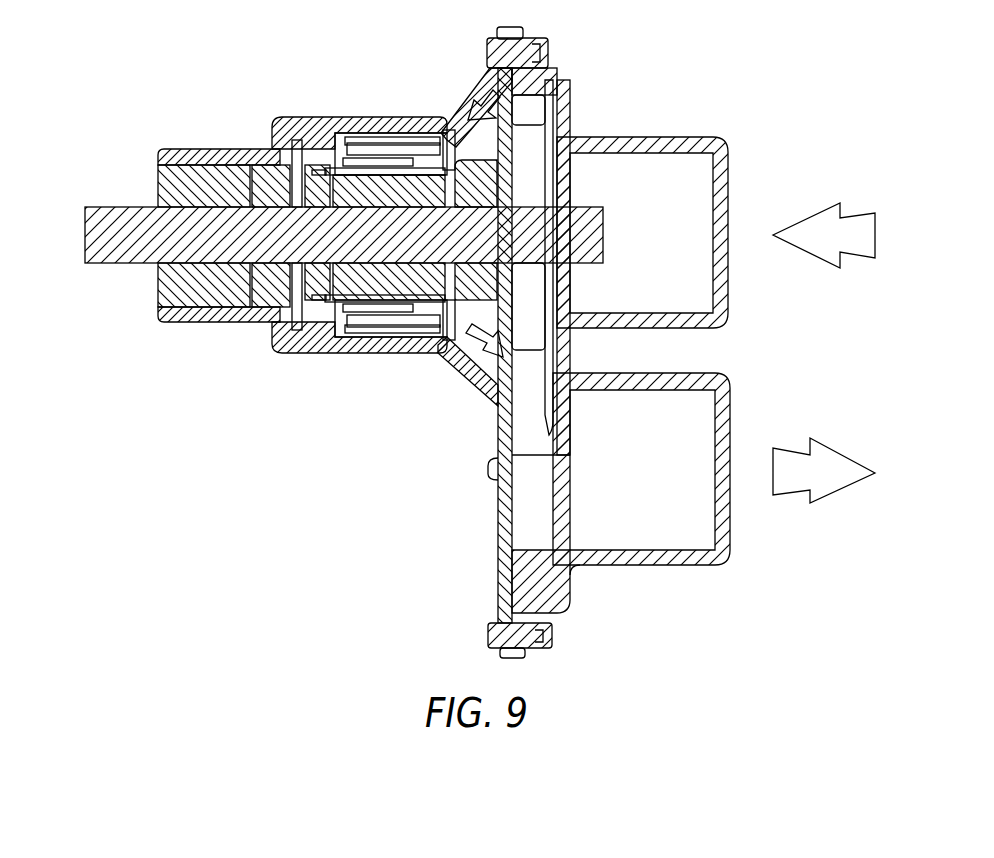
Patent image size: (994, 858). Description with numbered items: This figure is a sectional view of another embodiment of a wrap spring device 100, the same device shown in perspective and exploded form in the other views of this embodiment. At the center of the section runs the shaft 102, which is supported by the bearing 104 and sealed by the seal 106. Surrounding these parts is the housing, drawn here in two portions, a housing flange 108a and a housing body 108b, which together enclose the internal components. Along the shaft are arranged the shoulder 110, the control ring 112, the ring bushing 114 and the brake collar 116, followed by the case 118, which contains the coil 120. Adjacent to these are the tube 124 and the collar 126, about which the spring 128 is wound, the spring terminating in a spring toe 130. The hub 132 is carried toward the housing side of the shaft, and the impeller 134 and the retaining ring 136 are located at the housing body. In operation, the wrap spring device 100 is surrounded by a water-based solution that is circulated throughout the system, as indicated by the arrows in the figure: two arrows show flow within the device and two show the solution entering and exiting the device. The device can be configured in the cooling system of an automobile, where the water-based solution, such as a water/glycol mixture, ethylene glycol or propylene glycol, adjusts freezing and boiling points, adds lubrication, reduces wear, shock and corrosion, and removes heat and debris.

The wrap spring device 100 is at (843, 408).
The shaft 102 is at (120, 242).
The bearing 104 is at (180, 192).
The seal 106 is at (278, 287).
The housing 108a is at (497, 573).
The housing 108b is at (687, 270).
The shoulder 110 is at (295, 182).
The control ring 112 is at (320, 278).
The ring bushing 114 is at (295, 310).
The brake collar 116 is at (372, 167).
The case 118 is at (413, 136).
The coil 120 is at (360, 323).
The tube 124 is at (440, 158).
The collar 126 is at (393, 277).
The spring 128 is at (355, 178).
The spring toe 130 is at (333, 178).
The hub 132 is at (468, 272).
The impeller 134 is at (527, 108).
The retaining ring 136 is at (562, 200).